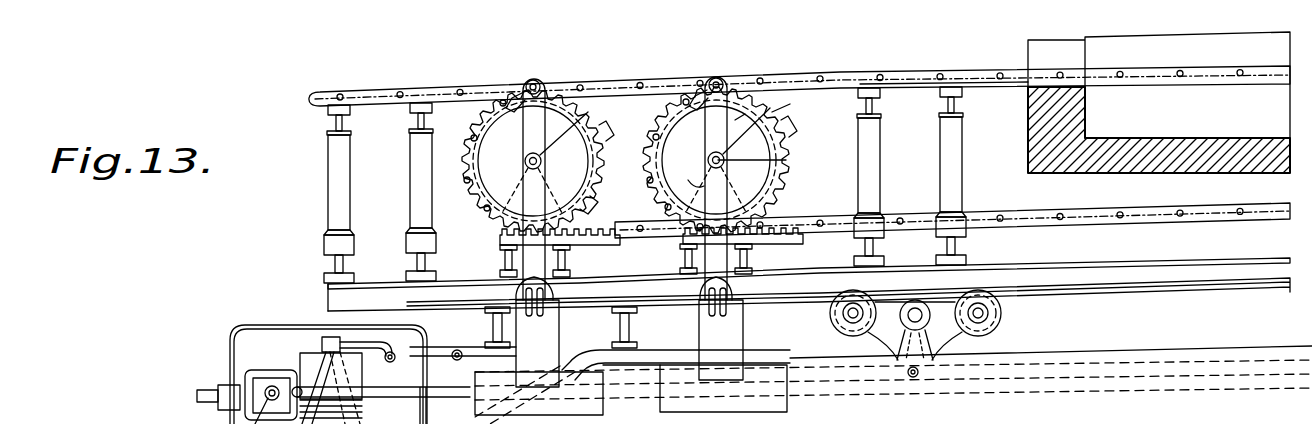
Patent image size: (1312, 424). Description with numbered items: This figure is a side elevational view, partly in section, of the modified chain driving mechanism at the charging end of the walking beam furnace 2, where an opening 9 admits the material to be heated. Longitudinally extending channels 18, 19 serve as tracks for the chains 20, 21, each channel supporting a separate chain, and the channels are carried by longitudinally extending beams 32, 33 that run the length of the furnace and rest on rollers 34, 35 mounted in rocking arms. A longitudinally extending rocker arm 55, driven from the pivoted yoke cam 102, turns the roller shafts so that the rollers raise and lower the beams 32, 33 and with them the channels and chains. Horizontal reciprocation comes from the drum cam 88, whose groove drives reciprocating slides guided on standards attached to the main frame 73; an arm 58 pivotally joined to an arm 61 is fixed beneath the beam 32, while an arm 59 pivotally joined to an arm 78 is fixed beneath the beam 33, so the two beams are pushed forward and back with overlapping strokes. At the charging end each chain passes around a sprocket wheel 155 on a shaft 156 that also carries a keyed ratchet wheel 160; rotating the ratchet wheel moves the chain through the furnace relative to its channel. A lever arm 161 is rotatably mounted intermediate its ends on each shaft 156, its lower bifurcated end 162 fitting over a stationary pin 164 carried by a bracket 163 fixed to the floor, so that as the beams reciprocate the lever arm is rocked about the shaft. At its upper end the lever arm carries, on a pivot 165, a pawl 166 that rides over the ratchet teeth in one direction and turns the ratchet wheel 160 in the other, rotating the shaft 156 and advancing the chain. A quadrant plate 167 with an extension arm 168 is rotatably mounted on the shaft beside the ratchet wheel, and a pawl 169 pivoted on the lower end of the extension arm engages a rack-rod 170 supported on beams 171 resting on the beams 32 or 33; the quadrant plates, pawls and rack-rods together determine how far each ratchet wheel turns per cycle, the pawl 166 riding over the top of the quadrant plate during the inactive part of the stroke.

The furnace 2 is at (1045, 117).
The opening 9 is at (1045, 53).
The longitudinally extending beams or channels 18 is at (892, 82).
The longitudinally extending beams or channels 19 is at (907, 90).
The chain 20 is at (462, 150).
The chain 21 is at (656, 207).
The longitudinally extending beam 32 is at (1148, 273).
The longitudinally extending beam 33 is at (1226, 282).
The roller 34 is at (846, 330).
The roller 35 is at (1001, 314).
The rocker arm 55 is at (1043, 360).
The arm 58 is at (460, 350).
The arm 59 is at (640, 355).
The arm 61 is at (434, 350).
The main frame 73 is at (241, 397).
The arm 78 is at (381, 405).
The drum cam 88 is at (318, 365).
The yoke cam 102 is at (258, 370).
The sprocket wheel 155 is at (598, 132).
The shaft 156 is at (786, 161).
The ratchet wheel 160 is at (586, 188).
The lever arm 161 is at (738, 118).
The bifurcated end 162 is at (745, 315).
The bracket 163 is at (549, 333).
The stationary pin 164 is at (700, 287).
The pivot 165 is at (723, 85).
The pawl 166 is at (521, 91).
The quadrant plate 167 is at (784, 127).
The extension arm 168 is at (685, 167).
The pawl 169 is at (541, 162).
The rack-rod 170 is at (612, 240).
The beam 171 is at (756, 260).